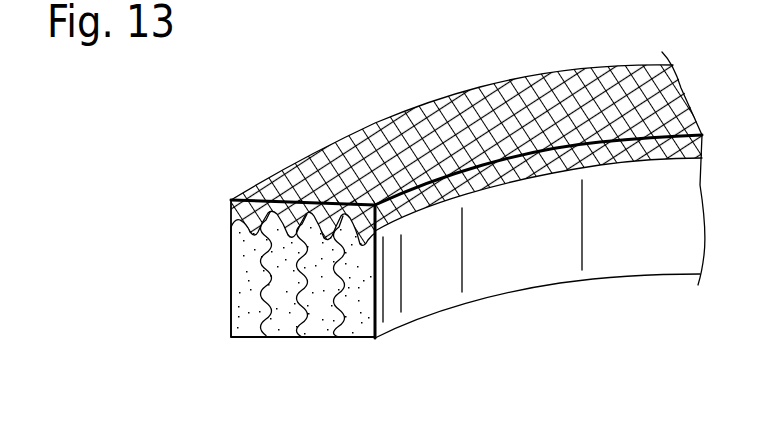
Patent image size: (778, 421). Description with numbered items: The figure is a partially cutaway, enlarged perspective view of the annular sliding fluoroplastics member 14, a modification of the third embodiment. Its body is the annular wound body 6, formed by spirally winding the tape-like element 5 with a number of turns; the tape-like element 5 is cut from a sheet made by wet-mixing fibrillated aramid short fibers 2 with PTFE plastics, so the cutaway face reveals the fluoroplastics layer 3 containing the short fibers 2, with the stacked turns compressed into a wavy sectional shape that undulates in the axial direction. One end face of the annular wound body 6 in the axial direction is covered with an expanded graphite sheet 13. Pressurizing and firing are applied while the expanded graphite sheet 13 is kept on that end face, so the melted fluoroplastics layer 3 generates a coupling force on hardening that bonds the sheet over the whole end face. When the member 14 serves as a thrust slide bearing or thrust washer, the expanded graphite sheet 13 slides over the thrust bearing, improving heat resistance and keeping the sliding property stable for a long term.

The annular sliding fluoroplastics member 14 is at (418, 98).
The expanded graphite sheet 13 is at (285, 199).
The short fibers 2 is at (269, 310).
The fluoroplastics layer 3 is at (283, 338).
The tape-like element 5 is at (328, 338).
The annular wound body 6 is at (512, 302).